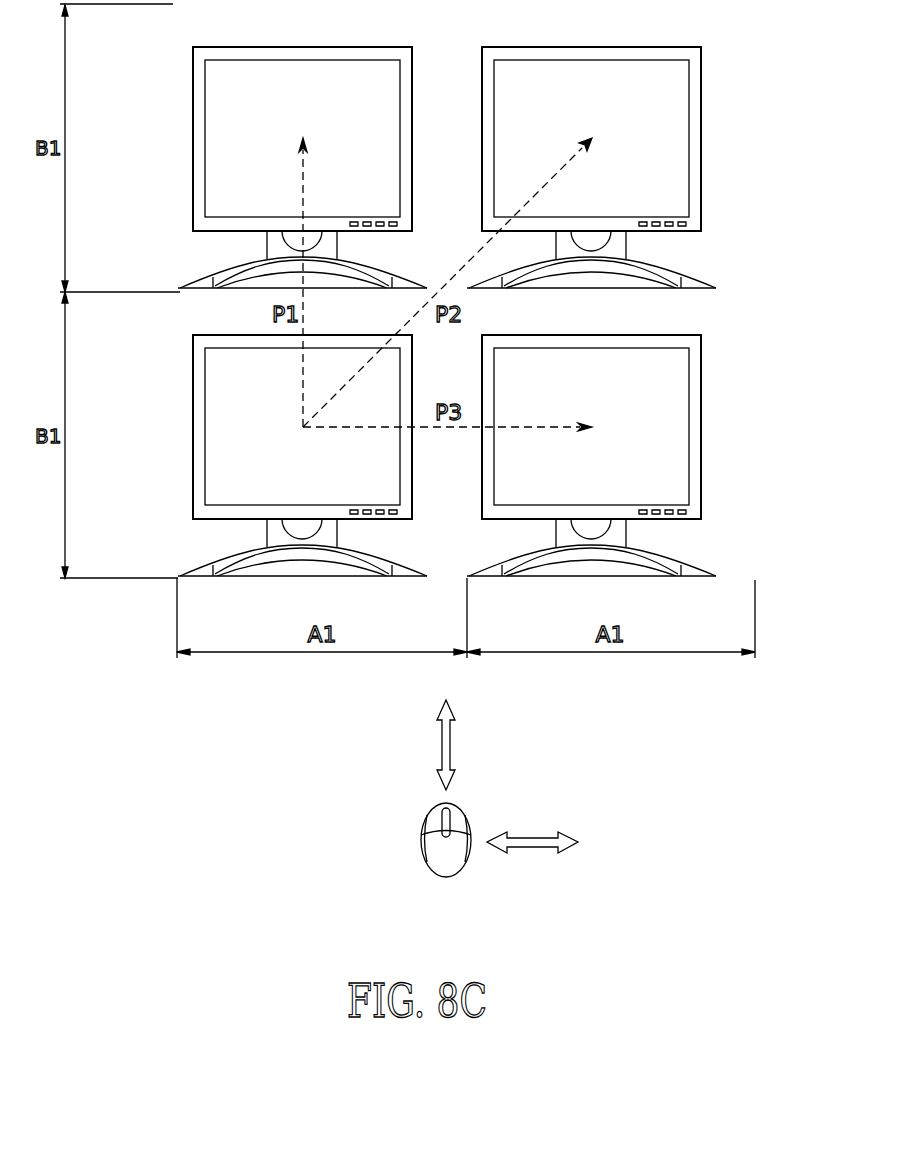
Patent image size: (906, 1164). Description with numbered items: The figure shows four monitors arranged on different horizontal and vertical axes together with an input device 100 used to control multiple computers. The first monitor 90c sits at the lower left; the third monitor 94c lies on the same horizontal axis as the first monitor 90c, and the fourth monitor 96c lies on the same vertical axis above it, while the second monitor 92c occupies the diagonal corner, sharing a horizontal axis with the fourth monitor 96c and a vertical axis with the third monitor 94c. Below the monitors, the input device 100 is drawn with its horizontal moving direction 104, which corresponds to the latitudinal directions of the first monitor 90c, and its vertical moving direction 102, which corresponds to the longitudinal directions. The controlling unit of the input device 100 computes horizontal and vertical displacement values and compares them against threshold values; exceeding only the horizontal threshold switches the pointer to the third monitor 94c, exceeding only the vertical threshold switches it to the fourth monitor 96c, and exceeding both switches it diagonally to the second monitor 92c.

The first monitor 90c is at (193, 428).
The second monitor 92c is at (702, 138).
The third monitor 94c is at (702, 426).
The fourth monitor 96c is at (193, 140).
The input device 100 is at (422, 835).
The vertical moving direction 102 is at (442, 742).
The horizontal moving direction 104 is at (545, 836).